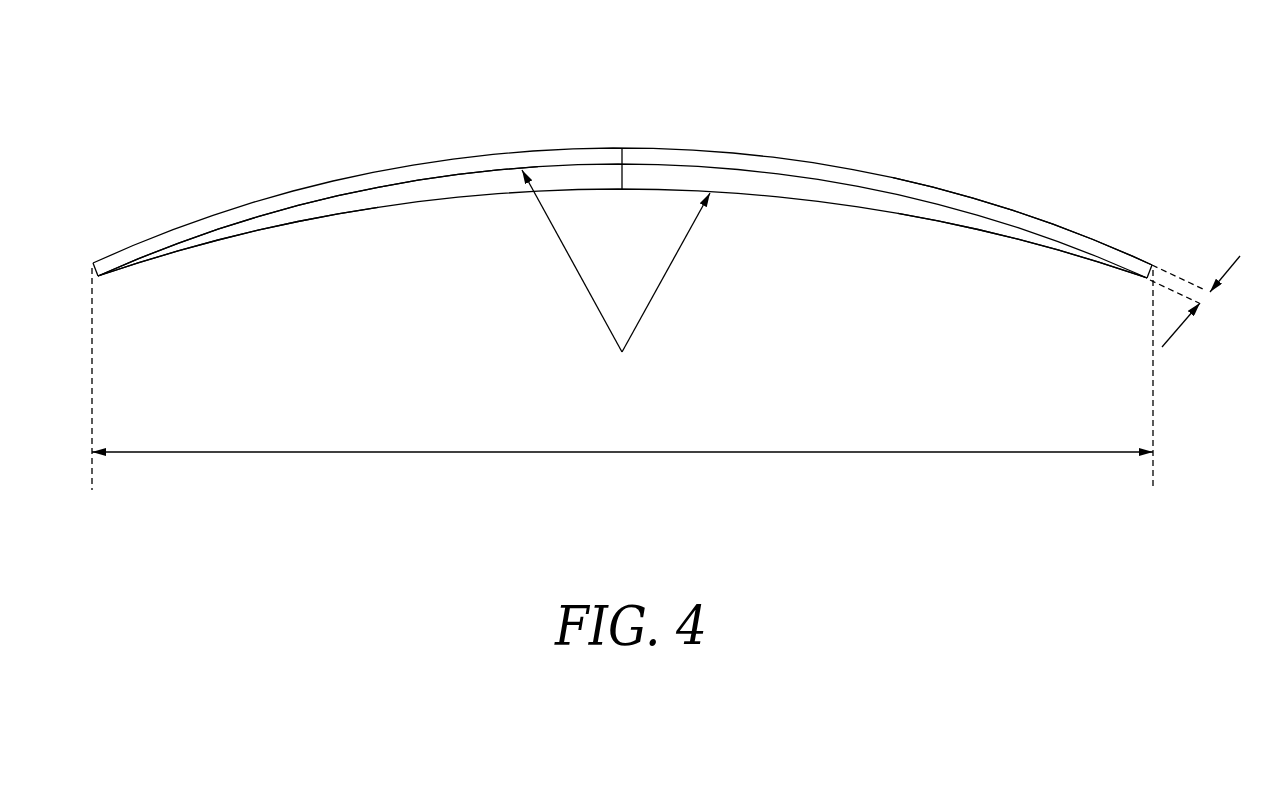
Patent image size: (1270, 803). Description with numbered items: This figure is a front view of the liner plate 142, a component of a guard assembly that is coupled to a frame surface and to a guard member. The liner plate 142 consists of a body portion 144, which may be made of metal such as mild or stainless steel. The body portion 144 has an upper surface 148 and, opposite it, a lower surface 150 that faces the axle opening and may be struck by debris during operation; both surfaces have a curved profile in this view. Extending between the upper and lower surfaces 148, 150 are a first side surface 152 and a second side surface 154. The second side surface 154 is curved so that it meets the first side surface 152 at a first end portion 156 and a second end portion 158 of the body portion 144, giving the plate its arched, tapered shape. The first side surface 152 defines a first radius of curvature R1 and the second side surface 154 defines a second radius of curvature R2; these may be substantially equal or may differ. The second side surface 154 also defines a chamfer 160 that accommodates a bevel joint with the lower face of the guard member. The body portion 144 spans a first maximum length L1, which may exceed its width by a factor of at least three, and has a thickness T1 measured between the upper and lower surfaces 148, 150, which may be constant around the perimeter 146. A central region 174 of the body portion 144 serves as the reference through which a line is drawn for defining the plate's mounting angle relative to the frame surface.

The liner plate 142 is at (196, 145).
The body portion 144 is at (944, 223).
The perimeter 146 is at (455, 175).
The upper surface 148 is at (1015, 210).
The lower surface 150 is at (860, 199).
The first side surface 152 is at (362, 213).
The second side surface 154 is at (708, 163).
The first end portion 156 is at (1145, 283).
The second end portion 158 is at (100, 282).
The chamfer 160 is at (870, 181).
The central region 174 is at (622, 138).
The first radius of curvature R1 is at (652, 298).
The second radius of curvature R2 is at (585, 293).
The first maximum length L1 is at (622, 379).
The thickness T1 is at (1180, 330).